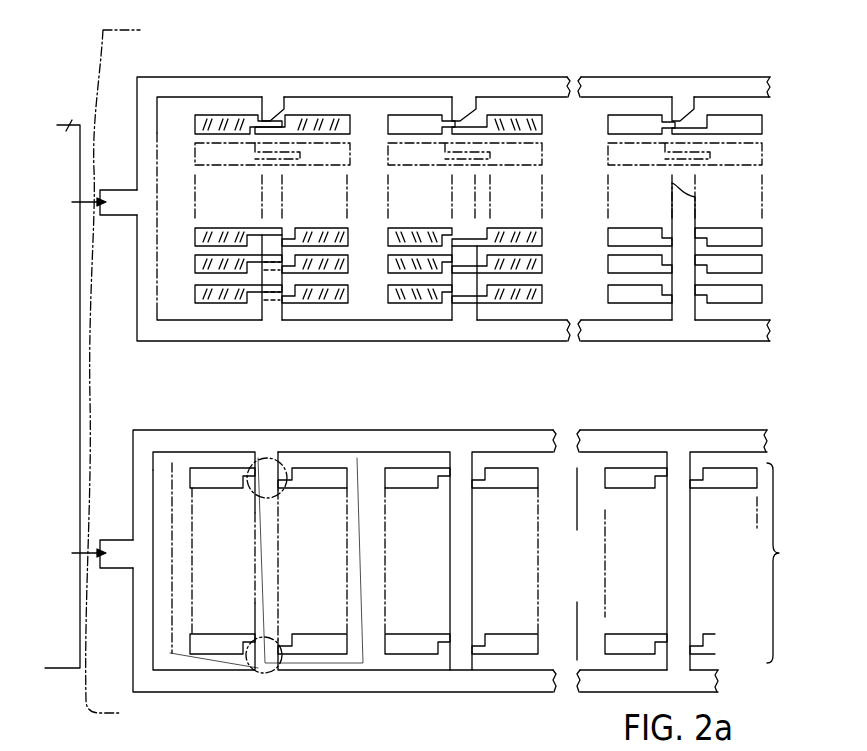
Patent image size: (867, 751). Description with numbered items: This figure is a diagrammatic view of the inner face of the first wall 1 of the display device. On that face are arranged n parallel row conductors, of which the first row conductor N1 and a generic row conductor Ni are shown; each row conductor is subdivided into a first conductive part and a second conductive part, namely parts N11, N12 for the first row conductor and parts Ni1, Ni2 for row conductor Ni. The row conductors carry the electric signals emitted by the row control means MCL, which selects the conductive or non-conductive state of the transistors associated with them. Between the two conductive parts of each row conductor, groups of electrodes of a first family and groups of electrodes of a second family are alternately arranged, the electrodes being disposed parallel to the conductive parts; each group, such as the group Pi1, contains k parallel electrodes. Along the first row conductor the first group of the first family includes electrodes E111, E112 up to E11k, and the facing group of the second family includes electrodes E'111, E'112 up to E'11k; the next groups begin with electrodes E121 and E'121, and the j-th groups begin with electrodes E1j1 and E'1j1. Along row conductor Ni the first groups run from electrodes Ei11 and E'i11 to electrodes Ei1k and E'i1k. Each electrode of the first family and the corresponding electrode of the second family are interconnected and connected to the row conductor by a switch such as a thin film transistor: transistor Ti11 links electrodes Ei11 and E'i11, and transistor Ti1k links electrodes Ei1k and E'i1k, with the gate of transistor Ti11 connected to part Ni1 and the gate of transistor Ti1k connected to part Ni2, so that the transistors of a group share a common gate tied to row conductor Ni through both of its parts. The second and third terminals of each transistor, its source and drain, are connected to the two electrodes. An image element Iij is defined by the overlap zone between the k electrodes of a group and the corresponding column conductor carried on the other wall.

The first wall 1 is at (108, 98).
The row control means MCL is at (58, 382).
The row conductor N1 is at (123, 205).
The row conductor Ni is at (123, 558).
The first conductive part N11 is at (258, 76).
The second conductive part N12 is at (227, 327).
The electrode of the first family E111 is at (205, 116).
The electrode of the second family E'111 is at (303, 79).
The electrode of the first family E112 is at (195, 146).
The electrode of the second family E'112 is at (323, 105).
The electrode of the first family E121 is at (411, 118).
The electrode of the second family E'121 is at (497, 92).
The electrode of the first family E1j1 is at (628, 118).
The electrode of the second family E'1j1 is at (717, 87).
The electrode of the first family E11k is at (207, 300).
The electrode of the second family E'11k is at (315, 302).
The first conductive part Ni1 is at (196, 435).
The second conductive part Ni2 is at (193, 678).
The electrode of the first family Ei11 is at (206, 466).
The electrode of the second family E'i11 is at (321, 443).
The electrode of the first family Ei1k is at (218, 648).
The electrode of the second family E'i1k is at (317, 683).
The transistor Ti11 is at (245, 490).
The transistor Ti1k is at (280, 632).
The group of electrodes Pi1 is at (363, 663).
The image element Iij is at (578, 520).